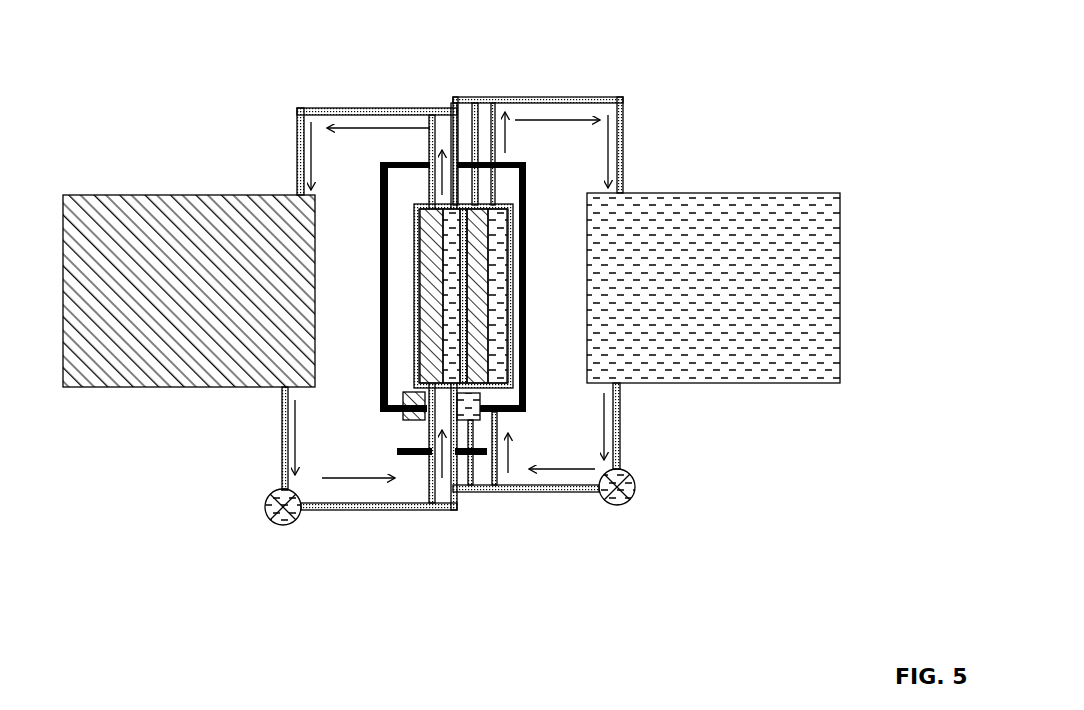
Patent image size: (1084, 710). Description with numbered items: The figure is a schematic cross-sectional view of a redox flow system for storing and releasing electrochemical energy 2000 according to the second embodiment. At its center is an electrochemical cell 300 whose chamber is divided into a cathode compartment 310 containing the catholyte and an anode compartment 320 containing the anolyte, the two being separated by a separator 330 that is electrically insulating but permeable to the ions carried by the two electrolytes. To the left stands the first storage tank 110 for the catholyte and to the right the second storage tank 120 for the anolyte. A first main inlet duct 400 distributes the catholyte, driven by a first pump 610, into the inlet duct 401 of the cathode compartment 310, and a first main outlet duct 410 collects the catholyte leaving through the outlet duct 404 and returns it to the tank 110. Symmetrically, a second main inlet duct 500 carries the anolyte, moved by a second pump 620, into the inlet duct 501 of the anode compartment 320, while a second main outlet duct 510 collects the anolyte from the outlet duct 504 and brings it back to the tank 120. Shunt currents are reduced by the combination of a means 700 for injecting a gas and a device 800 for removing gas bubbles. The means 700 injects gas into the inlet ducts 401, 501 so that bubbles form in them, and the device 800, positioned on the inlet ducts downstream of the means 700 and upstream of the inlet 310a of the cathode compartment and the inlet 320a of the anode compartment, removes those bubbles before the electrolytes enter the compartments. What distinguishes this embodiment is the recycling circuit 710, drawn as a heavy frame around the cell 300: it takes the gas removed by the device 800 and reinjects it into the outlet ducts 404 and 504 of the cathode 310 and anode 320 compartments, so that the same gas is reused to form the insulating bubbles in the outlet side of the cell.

The redox flow system for storing and releasing electrochemical energy 2000 is at (146, 48).
The first storage tank 110 is at (195, 195).
The second storage tank 120 is at (718, 193).
The electrochemical cell 300 is at (416, 224).
The cathode compartment 310 is at (432, 298).
The inlet of the cathode compartment 310a is at (445, 378).
The anode compartment 320 is at (478, 270).
The inlet of the anode compartment 320a is at (472, 383).
The separator 330 is at (462, 264).
The first main inlet duct 400 is at (370, 510).
The inlet duct of the cathode compartment 401 is at (428, 478).
The outlet duct of the cathode compartment 404 is at (429, 187).
The first main outlet duct 410 is at (363, 108).
The second main inlet duct 500 is at (550, 492).
The inlet duct of the anode compartment 501 is at (490, 473).
The outlet duct of the anode compartment 504 is at (497, 197).
The second main outlet duct 510 is at (580, 97).
The first pump 610 is at (268, 518).
The second pump 620 is at (620, 503).
The means for injecting a gas 700 is at (397, 451).
The gas recycling circuit 710 is at (378, 186).
The device for removing gas bubbles 800 is at (403, 406).